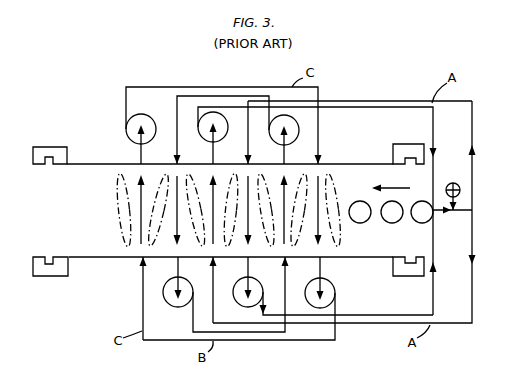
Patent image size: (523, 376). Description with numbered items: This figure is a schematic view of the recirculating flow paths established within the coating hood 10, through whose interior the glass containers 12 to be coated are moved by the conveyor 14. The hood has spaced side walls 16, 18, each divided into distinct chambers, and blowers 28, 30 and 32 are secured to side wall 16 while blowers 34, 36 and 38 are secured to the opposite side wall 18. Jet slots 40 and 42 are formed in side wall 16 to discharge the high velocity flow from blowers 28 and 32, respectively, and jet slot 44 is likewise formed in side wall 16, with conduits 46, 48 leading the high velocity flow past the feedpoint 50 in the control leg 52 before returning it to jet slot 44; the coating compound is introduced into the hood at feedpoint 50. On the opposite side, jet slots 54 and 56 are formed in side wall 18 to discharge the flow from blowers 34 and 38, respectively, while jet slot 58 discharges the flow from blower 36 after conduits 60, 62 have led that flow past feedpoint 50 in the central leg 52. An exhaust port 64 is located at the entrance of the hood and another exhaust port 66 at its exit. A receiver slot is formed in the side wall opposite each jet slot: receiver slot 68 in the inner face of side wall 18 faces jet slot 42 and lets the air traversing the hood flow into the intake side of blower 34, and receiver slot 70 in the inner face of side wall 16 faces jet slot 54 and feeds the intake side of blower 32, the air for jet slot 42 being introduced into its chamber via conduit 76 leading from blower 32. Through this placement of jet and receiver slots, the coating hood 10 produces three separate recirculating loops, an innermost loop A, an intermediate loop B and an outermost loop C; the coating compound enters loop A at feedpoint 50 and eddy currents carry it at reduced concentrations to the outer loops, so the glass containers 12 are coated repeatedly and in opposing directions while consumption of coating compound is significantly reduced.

The coating hood 10 is at (98, 285).
The glass containers 12 is at (418, 222).
The conveyor 14 is at (79, 207).
The side wall 16 is at (365, 257).
The side wall 18 is at (361, 163).
The blower 28 is at (170, 301).
The blower 30 is at (240, 300).
The blower 32 is at (328, 293).
The blower 34 is at (142, 114).
The blower 36 is at (217, 119).
The blower 38 is at (295, 125).
The jet slot 40 is at (288, 260).
The jet slot 42 is at (138, 263).
The jet slot 44 is at (215, 258).
The conduit 46 is at (388, 312).
The conduit 48 is at (474, 279).
The feedpoint 50 is at (460, 188).
The control leg 52 is at (465, 214).
The jet slot 54 is at (322, 160).
The jet slot 56 is at (180, 160).
The jet slot 58 is at (216, 162).
The conduit 60 is at (409, 108).
The conduit 62 is at (390, 99).
The exhaust port 64 is at (400, 274).
The exhaust port 66 is at (52, 147).
The receiver slot 68 is at (144, 164).
The receiver slot 70 is at (328, 259).
The conduit 76 is at (237, 341).